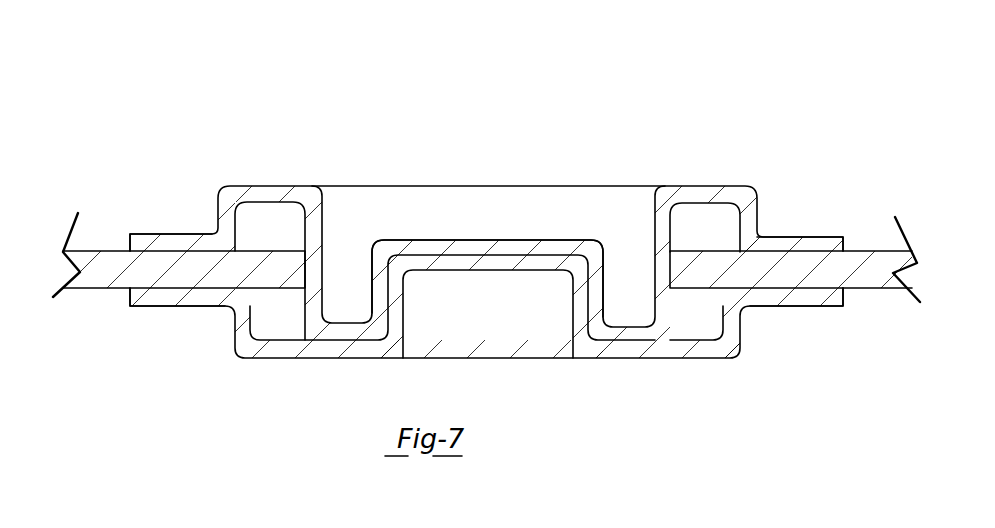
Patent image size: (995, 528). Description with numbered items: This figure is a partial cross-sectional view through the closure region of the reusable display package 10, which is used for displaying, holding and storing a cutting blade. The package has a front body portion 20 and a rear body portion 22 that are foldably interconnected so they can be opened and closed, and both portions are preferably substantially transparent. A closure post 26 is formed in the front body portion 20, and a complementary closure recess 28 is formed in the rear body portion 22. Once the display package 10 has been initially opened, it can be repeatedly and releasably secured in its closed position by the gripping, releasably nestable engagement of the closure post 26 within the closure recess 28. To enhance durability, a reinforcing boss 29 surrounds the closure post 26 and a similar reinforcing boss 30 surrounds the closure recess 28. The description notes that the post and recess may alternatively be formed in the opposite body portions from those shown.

The reusable display package 10 is at (612, 170).
The front body portion 20 is at (222, 322).
The rear body portion 22 is at (205, 224).
The closure post 26 is at (574, 299).
The closure recess 28 is at (404, 287).
The reinforcing boss 29 is at (683, 352).
The reinforcing boss 30 is at (268, 192).